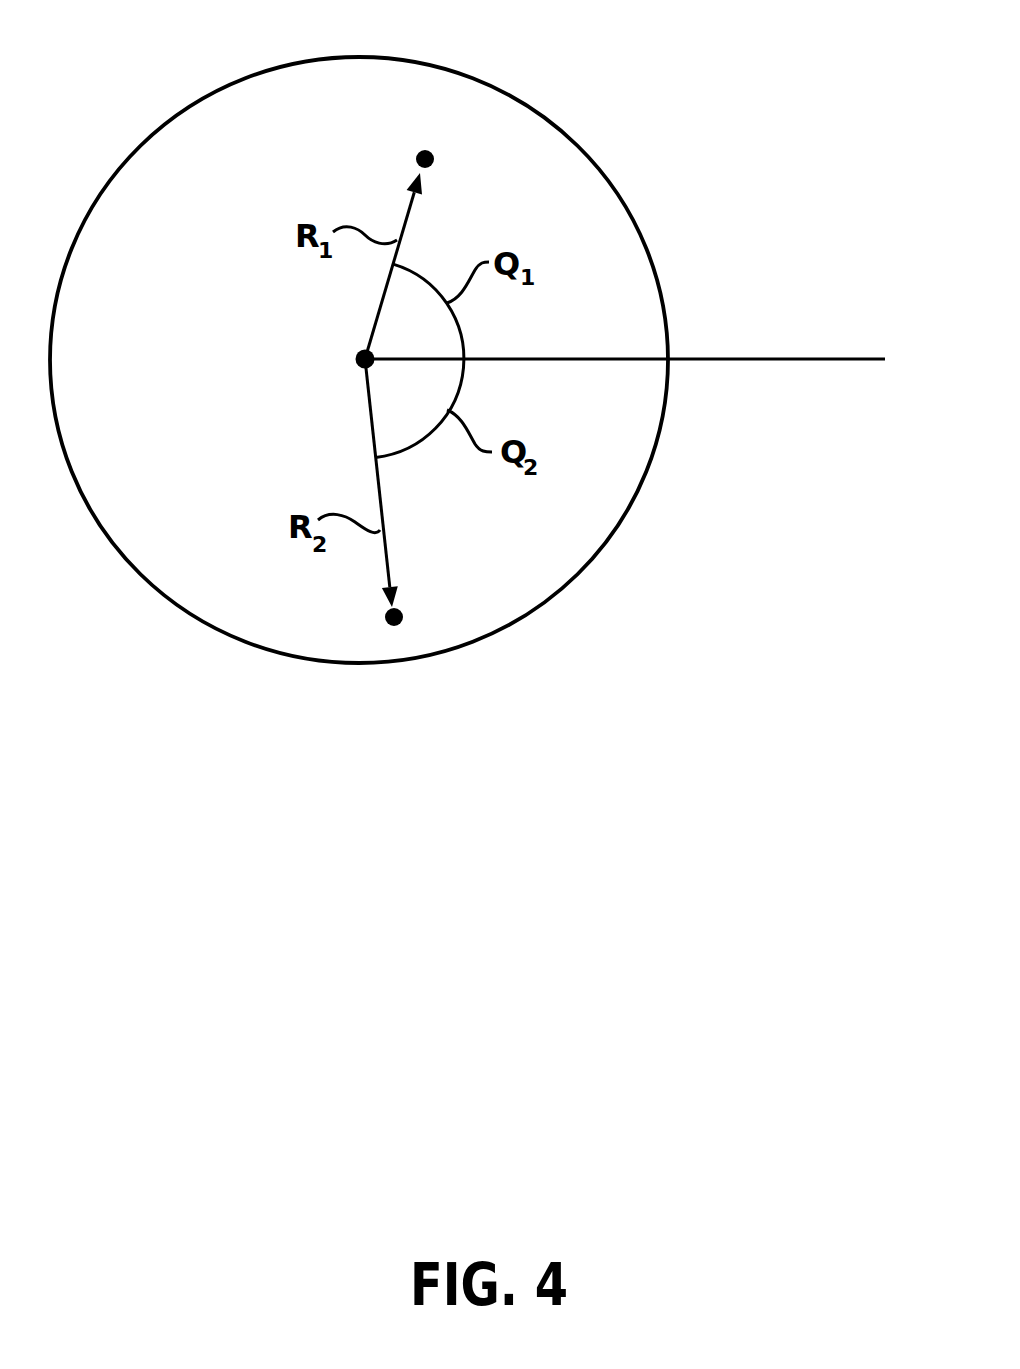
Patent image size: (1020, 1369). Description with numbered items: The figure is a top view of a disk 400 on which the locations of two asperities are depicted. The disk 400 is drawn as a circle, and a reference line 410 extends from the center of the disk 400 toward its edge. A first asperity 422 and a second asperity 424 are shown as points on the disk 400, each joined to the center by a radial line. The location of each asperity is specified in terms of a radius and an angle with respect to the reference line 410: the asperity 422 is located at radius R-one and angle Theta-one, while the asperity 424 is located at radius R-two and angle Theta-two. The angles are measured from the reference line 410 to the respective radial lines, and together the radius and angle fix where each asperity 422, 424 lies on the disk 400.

The disk 400 is at (650, 465).
The reference line 410 is at (625, 357).
The asperity 422 is at (425, 159).
The asperity 424 is at (394, 617).